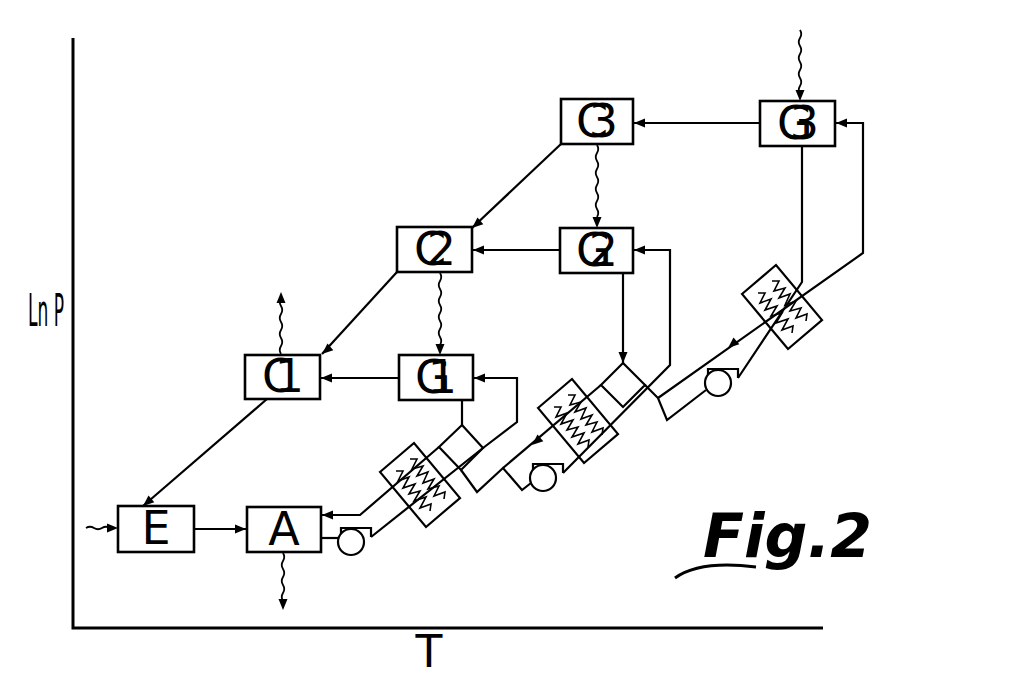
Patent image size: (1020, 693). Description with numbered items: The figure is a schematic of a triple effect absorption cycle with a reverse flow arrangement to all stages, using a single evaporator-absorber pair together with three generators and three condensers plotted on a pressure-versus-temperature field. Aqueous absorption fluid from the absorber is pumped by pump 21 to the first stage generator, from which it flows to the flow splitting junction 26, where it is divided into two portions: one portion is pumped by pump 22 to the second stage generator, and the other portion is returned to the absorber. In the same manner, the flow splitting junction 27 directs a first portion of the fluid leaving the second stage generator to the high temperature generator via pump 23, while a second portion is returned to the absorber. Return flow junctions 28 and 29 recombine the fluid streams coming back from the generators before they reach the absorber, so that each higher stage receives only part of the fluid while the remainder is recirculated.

The pump 21 is at (357, 554).
The pump 22 is at (549, 490).
The pump 23 is at (727, 395).
The flow splitting junction 26 is at (461, 424).
The flow splitting junction 27 is at (622, 362).
The return flow junction 28 is at (601, 383).
The return flow junction 29 is at (437, 447).